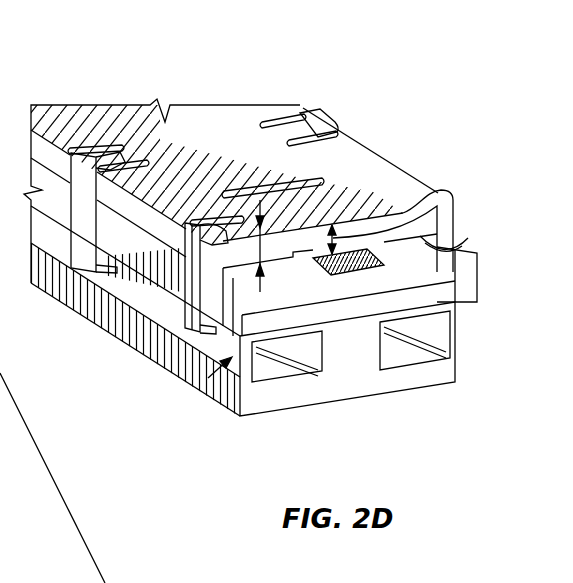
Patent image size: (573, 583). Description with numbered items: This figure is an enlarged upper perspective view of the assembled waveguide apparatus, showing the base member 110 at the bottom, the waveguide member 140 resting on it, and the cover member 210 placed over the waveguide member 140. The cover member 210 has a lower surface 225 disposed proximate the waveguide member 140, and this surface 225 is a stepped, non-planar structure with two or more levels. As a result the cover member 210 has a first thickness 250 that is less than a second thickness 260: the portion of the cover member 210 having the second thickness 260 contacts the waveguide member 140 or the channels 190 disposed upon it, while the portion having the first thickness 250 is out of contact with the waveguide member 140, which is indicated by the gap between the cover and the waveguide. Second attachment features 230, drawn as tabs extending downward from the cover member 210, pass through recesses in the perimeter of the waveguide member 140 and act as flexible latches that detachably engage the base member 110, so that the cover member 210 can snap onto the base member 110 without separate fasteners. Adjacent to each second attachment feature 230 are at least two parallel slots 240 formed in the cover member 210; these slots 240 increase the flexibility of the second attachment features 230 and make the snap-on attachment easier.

The base member 110 is at (347, 400).
The waveguide member 140 is at (478, 282).
The channels 190 is at (362, 280).
The cover member 210 is at (378, 157).
The surface 225 is at (440, 250).
The second attachment features 230 is at (332, 116).
The slots 240 is at (133, 160).
The first thickness 250 is at (385, 236).
The second thickness 260 is at (443, 189).